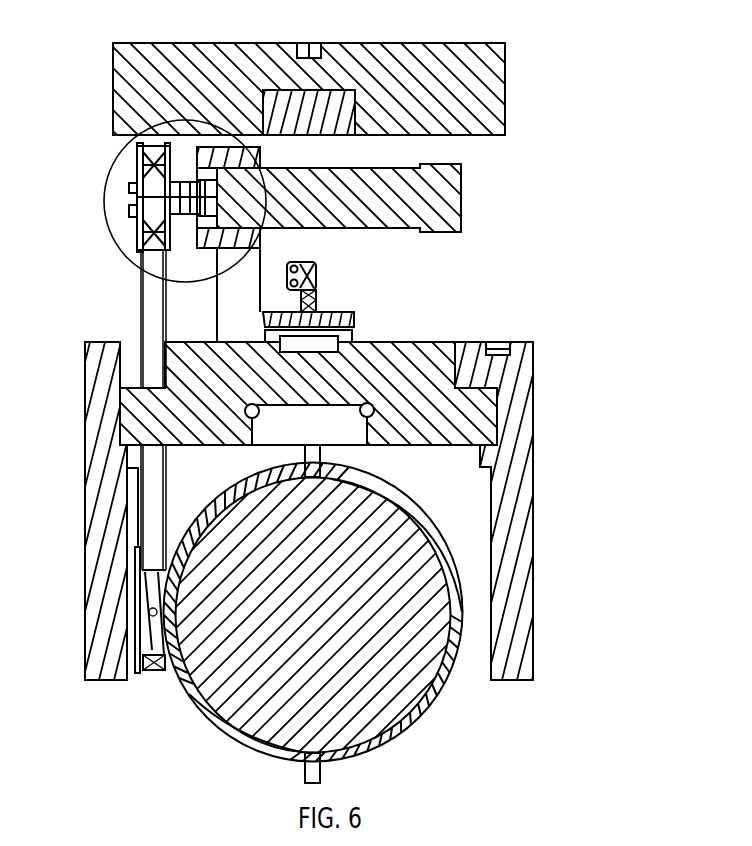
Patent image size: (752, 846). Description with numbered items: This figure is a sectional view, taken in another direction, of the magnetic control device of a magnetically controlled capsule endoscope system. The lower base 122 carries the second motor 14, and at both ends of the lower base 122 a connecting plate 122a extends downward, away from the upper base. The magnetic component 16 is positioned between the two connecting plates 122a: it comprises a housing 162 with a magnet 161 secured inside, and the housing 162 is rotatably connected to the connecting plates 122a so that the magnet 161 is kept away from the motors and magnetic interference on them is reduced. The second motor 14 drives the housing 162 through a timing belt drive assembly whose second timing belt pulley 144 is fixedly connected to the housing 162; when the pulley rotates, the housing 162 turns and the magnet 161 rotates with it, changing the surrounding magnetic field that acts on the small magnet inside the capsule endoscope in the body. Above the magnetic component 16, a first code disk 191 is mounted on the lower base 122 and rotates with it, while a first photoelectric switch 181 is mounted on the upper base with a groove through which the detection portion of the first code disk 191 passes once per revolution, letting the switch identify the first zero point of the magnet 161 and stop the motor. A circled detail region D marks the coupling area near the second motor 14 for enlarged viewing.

The second motor 14 is at (461, 188).
The first photoelectric switch 181 is at (312, 292).
The first code disk 191 is at (355, 320).
The lower base 122 is at (322, 491).
The connecting plate 122a is at (533, 478).
The second timing belt pulley 144 is at (152, 630).
The magnetic component 16 is at (369, 623).
The magnet 161 is at (385, 736).
The housing 162 is at (420, 722).
The detail region D is at (106, 186).